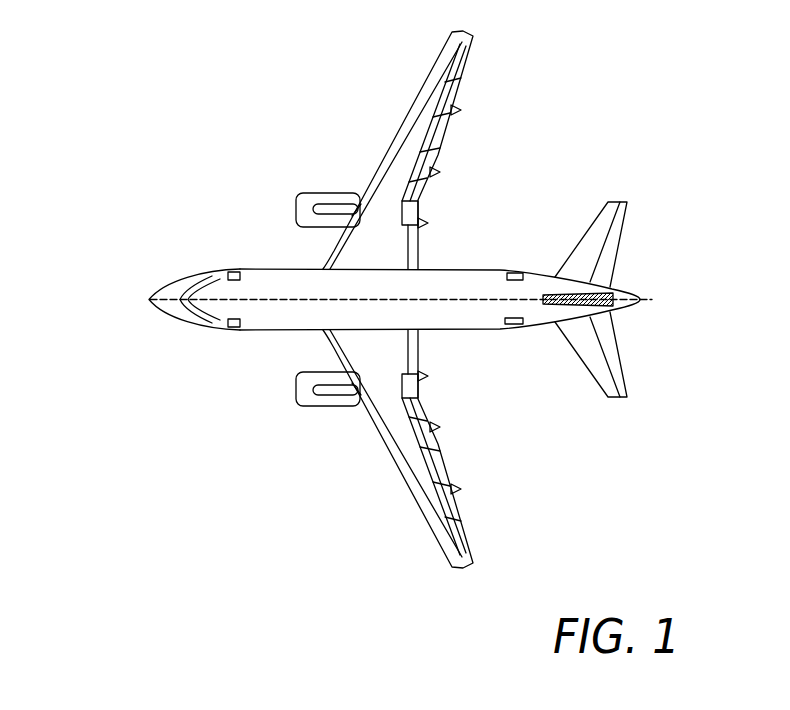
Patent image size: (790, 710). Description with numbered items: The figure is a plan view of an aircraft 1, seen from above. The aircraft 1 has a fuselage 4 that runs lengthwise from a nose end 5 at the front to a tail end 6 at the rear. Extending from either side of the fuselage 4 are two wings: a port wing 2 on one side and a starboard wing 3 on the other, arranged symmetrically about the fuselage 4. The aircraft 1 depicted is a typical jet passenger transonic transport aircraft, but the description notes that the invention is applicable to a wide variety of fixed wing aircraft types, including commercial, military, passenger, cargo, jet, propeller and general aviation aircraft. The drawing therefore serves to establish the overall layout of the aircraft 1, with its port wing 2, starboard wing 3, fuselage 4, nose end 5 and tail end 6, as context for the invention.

The aircraft 1 is at (392, 306).
The port wing 2 is at (438, 517).
The starboard wing 3 is at (412, 153).
The fuselage 4 is at (277, 277).
The nose end 5 is at (160, 278).
The tail end 6 is at (615, 302).